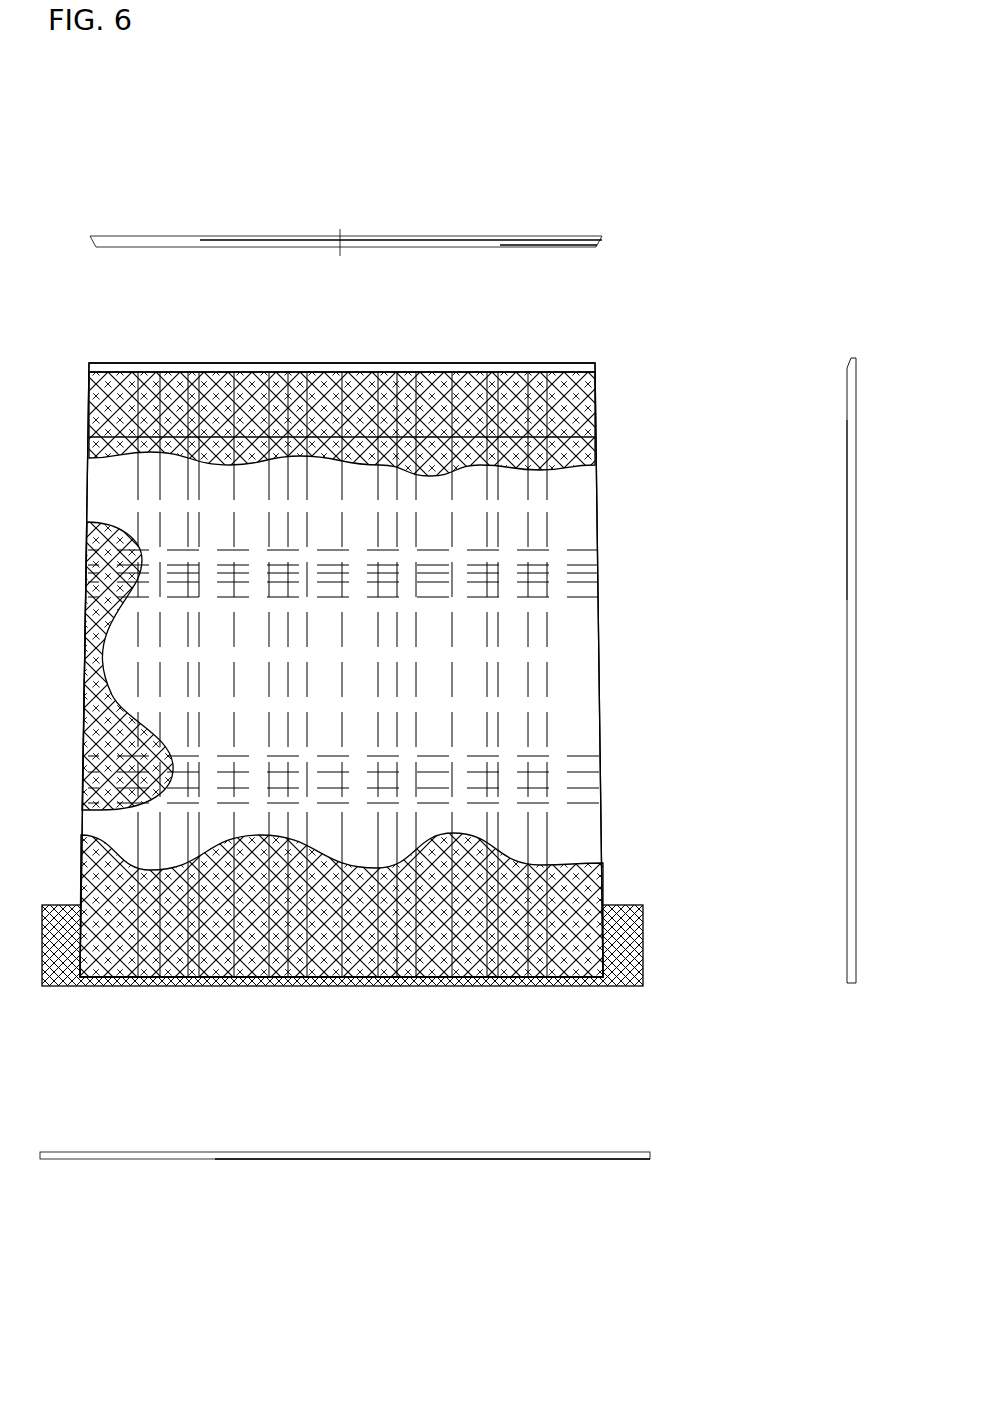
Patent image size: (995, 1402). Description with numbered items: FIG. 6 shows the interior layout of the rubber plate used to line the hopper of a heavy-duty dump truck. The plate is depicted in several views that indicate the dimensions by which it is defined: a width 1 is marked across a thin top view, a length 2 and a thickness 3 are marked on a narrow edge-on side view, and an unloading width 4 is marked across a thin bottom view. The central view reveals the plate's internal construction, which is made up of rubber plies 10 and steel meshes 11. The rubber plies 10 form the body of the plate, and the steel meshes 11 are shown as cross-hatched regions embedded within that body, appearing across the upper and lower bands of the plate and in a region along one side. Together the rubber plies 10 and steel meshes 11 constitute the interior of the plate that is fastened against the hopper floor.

The width 1 is at (601, 232).
The length 2 is at (790, 355).
The thickness 3 is at (858, 355).
The unloading width 4 is at (651, 1214).
The rubber plies 10 is at (368, 642).
The steel meshes 11 is at (584, 419).